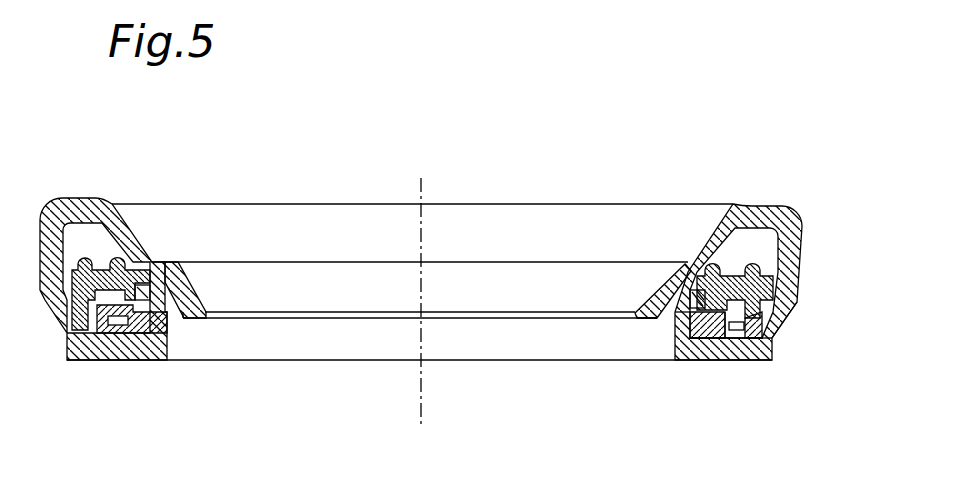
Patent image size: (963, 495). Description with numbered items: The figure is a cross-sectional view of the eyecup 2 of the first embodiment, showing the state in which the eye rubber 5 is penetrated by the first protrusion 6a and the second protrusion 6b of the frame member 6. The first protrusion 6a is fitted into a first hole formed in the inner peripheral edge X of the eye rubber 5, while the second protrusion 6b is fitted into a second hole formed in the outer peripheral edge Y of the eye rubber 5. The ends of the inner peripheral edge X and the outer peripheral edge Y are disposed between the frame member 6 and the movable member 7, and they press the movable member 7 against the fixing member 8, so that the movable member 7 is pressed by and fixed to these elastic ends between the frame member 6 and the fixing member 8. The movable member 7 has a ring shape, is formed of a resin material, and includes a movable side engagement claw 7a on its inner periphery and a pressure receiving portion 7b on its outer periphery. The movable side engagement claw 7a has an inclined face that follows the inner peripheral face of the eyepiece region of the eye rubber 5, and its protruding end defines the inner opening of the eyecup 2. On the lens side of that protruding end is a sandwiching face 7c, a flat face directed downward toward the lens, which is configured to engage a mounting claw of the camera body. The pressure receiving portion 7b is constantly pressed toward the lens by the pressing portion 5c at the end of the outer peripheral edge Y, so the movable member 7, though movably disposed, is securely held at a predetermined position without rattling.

The eyecup 2 is at (777, 159).
The eye rubber 5 is at (803, 207).
The pressing portion 5c is at (792, 318).
The frame member 6 is at (782, 282).
The first protrusion 6a is at (693, 290).
The second protrusion 6b is at (775, 335).
The movable member 7 is at (684, 272).
The movable side engagement claw 7a is at (650, 300).
The pressure receiving portion 7b is at (725, 340).
The sandwiching face 7c is at (652, 320).
The fixing member 8 is at (712, 352).
The inner peripheral edge X is at (683, 322).
The outer peripheral edge Y is at (772, 342).